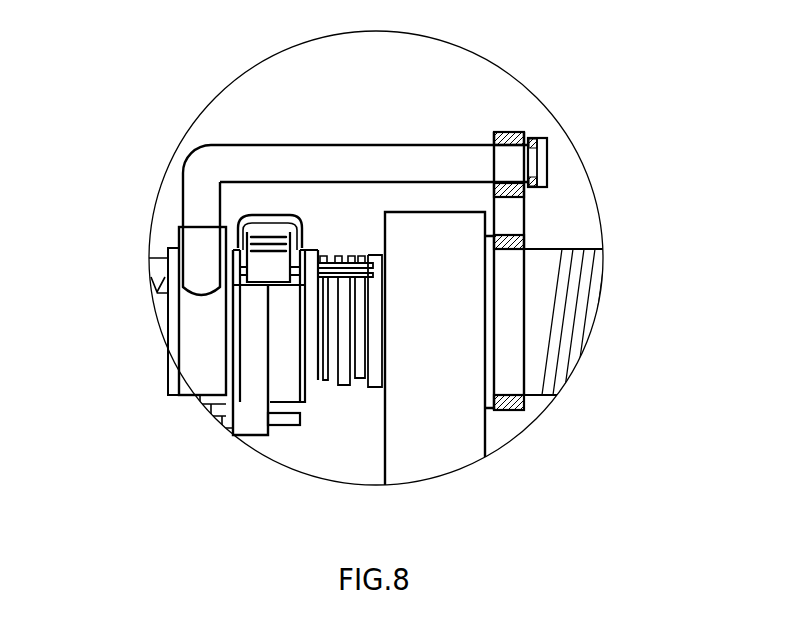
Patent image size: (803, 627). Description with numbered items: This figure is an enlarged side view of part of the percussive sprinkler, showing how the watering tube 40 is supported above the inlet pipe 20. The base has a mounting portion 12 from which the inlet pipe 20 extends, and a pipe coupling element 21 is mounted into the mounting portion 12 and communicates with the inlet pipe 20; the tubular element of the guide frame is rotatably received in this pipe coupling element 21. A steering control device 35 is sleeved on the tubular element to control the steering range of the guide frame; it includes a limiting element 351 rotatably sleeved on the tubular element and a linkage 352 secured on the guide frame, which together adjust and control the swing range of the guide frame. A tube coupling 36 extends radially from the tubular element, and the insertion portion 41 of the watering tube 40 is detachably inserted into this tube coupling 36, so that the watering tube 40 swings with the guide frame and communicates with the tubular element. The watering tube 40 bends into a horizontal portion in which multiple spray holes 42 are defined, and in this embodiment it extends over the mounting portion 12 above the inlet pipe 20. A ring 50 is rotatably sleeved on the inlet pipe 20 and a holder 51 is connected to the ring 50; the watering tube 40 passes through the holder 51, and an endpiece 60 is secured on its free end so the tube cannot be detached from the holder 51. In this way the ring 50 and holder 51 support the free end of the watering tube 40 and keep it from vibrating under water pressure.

The mounting portion 12 is at (485, 433).
The inlet pipe 20 is at (595, 323).
The pipe coupling element 21 is at (352, 380).
The steering control device 35 is at (259, 382).
The limiting element 351 is at (247, 432).
The linkage 352 is at (292, 426).
The tube coupling 36 is at (179, 233).
The watering tube 40 is at (294, 184).
The insertion portion 41 is at (183, 208).
The spray holes 42 is at (243, 146).
The ring 50 is at (545, 241).
The holder 51 is at (507, 132).
The endpiece 60 is at (532, 139).